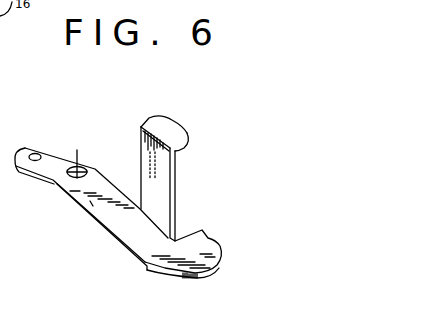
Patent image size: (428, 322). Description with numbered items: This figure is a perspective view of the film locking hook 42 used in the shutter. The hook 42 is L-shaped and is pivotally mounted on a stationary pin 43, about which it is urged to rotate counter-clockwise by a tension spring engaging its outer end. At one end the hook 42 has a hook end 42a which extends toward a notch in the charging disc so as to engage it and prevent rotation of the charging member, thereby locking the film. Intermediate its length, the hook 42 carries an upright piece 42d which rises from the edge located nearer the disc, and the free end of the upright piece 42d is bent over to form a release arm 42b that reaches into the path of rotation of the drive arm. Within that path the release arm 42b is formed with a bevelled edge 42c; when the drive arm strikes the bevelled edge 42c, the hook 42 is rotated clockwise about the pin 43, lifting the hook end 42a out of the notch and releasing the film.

The film locking hook 42 is at (119, 231).
The hook end 42a is at (205, 239).
The release arm 42b is at (185, 137).
The bevelled edge 42c is at (178, 118).
The upright piece 42d is at (164, 187).
The stationary pin 43 is at (77, 152).